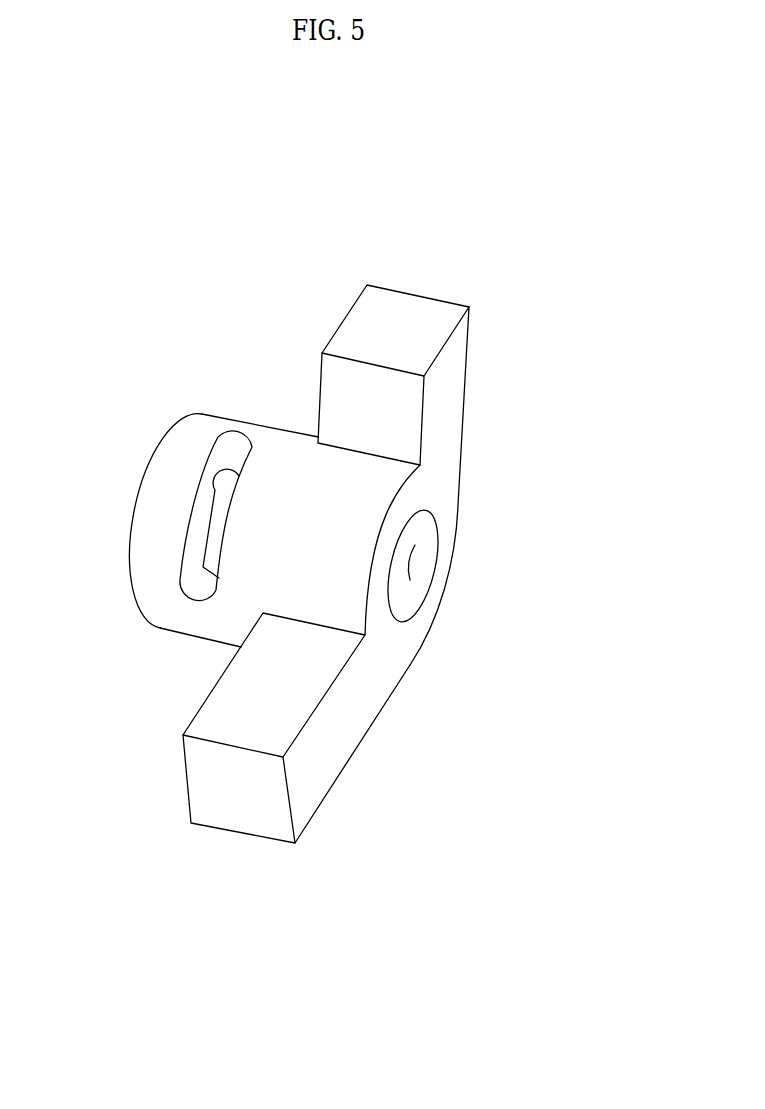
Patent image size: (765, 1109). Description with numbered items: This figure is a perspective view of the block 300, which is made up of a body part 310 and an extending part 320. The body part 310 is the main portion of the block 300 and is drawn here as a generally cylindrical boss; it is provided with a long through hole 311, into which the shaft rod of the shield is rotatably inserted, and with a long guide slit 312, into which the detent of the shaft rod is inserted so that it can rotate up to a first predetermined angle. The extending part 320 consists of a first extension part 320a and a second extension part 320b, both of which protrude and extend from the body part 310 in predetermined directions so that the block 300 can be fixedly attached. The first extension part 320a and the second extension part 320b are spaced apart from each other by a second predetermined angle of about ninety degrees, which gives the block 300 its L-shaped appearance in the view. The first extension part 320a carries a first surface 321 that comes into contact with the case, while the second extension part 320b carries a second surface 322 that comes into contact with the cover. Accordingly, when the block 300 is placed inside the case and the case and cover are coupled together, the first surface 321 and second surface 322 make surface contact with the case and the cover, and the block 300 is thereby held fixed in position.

The block 300 is at (114, 204).
The body part 310 is at (280, 550).
The long through hole 311 is at (408, 568).
The long guide slit 312 is at (213, 540).
The extending part 320 is at (409, 573).
The first extension part 320a is at (467, 370).
The second extension part 320b is at (355, 752).
The first surface 321 is at (412, 322).
The second surface 322 is at (235, 803).